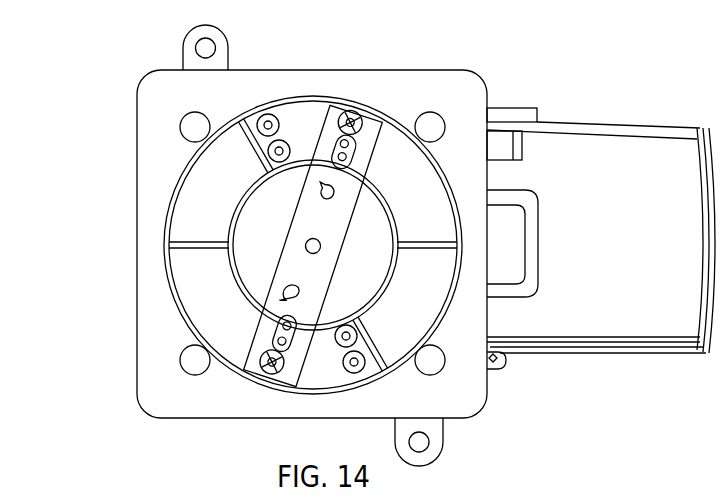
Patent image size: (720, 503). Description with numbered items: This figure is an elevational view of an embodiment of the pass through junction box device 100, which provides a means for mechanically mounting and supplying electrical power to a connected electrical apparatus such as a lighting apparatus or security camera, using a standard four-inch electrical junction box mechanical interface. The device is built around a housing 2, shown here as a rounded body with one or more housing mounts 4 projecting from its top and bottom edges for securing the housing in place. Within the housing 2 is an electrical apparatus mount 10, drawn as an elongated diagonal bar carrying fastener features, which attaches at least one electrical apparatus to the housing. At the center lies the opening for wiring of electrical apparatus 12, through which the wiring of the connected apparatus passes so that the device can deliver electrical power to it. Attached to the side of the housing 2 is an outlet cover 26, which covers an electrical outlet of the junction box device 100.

The pass through junction box device 100 is at (376, 243).
The housing 2 is at (302, 244).
The housing mount 4 is at (320, 245).
The electrical apparatus mount 10 is at (306, 122).
The opening for wiring of electrical apparatus 12 is at (252, 237).
The outlet cover 26 is at (601, 235).